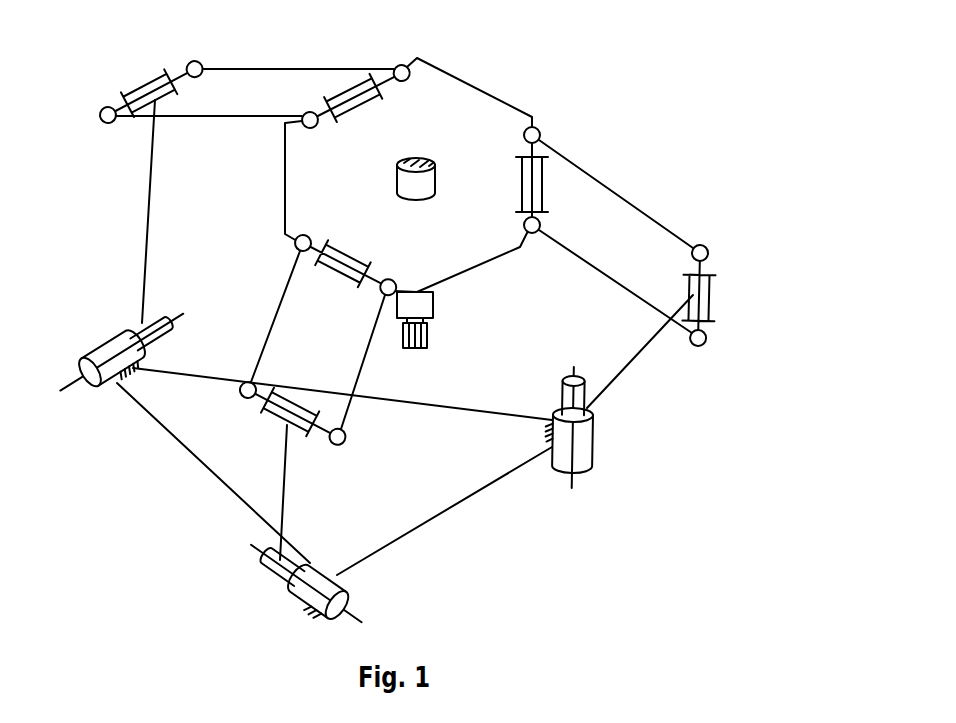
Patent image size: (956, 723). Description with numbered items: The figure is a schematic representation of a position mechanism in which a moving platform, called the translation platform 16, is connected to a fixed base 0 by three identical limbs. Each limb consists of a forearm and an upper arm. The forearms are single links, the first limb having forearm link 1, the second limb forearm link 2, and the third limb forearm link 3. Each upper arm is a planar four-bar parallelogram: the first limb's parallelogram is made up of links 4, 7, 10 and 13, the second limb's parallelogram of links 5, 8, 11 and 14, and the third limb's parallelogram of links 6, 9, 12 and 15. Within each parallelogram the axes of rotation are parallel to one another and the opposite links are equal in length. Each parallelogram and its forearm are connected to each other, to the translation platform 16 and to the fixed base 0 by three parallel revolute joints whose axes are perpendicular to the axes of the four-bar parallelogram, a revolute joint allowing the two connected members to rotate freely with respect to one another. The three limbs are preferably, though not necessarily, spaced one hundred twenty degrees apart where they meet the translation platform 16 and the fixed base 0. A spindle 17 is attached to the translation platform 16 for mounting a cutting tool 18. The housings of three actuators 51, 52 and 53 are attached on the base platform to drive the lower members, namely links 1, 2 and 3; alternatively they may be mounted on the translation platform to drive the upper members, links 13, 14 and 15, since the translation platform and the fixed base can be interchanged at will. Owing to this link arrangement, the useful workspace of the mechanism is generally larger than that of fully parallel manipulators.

The fixed base 0 is at (443, 515).
The forearm link of first limb 1 is at (280, 510).
The forearm link of second limb 2 is at (637, 362).
The forearm link of third limb 3 is at (150, 228).
The parallelogram link of first limb 4 is at (312, 432).
The parallelogram link of second limb 5 is at (702, 262).
The parallelogram link of third limb 6 is at (181, 71).
The parallelogram link of first limb 7 is at (275, 311).
The parallelogram link of second limb 8 is at (597, 272).
The parallelogram link of third limb 9 is at (280, 68).
The parallelogram link of first limb 10 is at (367, 363).
The parallelogram link of second limb 11 is at (635, 200).
The parallelogram link of third limb 12 is at (219, 121).
The upper parallelogram link of first limb 13 is at (373, 273).
The upper parallelogram link of second limb 14 is at (555, 153).
The upper parallelogram link of third limb 15 is at (330, 108).
The translation platform 16 is at (446, 92).
The spindle 17 is at (435, 307).
The cutting tool 18 is at (428, 335).
The actuator 51 is at (303, 604).
The actuator 52 is at (585, 442).
The actuator 53 is at (105, 363).